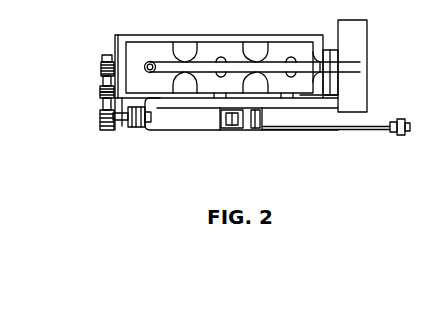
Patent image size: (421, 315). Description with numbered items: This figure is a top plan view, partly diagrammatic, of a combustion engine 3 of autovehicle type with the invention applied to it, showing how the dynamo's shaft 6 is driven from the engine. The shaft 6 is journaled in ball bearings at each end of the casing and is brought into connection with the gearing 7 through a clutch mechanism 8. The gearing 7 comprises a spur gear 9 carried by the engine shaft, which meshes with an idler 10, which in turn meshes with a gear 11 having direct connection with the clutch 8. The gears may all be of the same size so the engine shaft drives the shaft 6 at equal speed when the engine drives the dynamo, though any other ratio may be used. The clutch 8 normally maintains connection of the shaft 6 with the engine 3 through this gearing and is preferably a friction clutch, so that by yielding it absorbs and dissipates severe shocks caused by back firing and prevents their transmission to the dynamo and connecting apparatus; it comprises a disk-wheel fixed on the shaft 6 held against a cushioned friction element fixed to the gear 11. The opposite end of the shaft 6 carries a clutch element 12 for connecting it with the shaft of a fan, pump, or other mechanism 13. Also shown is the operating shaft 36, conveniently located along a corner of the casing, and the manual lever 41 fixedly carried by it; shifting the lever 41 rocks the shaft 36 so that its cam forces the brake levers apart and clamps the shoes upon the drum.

The engine 3 is at (258, 41).
The shaft 6 is at (146, 124).
The gearing 7 is at (100, 88).
The clutch mechanism 8 is at (133, 128).
The spur gear 9 is at (102, 60).
The idler 10 is at (100, 94).
The gear 11 is at (102, 127).
The clutch element 12 is at (233, 118).
The fan, pump, or other mechanism 13 is at (256, 129).
The operating shaft 36 is at (373, 124).
The manual lever 41 is at (398, 135).